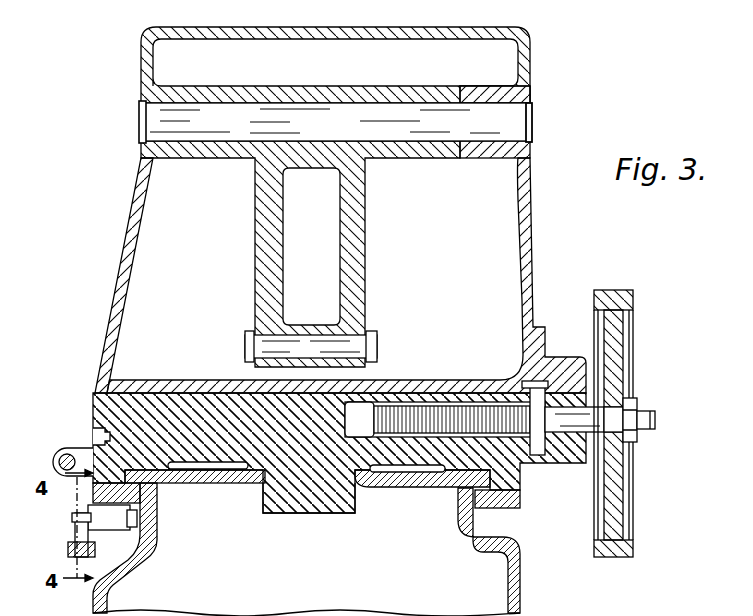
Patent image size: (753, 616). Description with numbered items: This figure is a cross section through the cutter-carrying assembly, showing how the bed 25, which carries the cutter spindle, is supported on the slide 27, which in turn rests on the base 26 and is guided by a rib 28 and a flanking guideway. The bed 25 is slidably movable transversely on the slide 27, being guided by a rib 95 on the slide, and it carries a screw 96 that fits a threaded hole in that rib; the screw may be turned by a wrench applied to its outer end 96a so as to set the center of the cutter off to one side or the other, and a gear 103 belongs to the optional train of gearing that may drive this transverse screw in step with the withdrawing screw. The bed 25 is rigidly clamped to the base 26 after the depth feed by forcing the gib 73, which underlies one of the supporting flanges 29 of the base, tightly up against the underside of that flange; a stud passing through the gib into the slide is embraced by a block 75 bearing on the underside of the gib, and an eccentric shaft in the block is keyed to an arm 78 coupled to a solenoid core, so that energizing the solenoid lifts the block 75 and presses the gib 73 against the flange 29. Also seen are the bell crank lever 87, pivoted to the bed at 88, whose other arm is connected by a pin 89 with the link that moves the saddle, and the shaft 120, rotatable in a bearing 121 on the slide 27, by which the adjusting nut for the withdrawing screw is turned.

The bed 25 is at (330, 210).
The base 26 is at (474, 538).
The slide 27 is at (238, 447).
The rib 28 is at (310, 497).
The supporting flange 29 is at (128, 473).
The gib 73 is at (93, 493).
The block 75 is at (118, 522).
The arm 78 is at (78, 536).
The bell crank lever 87 is at (358, 245).
The pivot 88 is at (345, 113).
The pin 89 is at (352, 345).
The rib 95 is at (190, 405).
The screw 96 is at (460, 390).
The outer end of screw 96a is at (655, 419).
The gear 103 is at (633, 308).
The shaft 120 is at (70, 447).
The bearing 121 is at (60, 453).